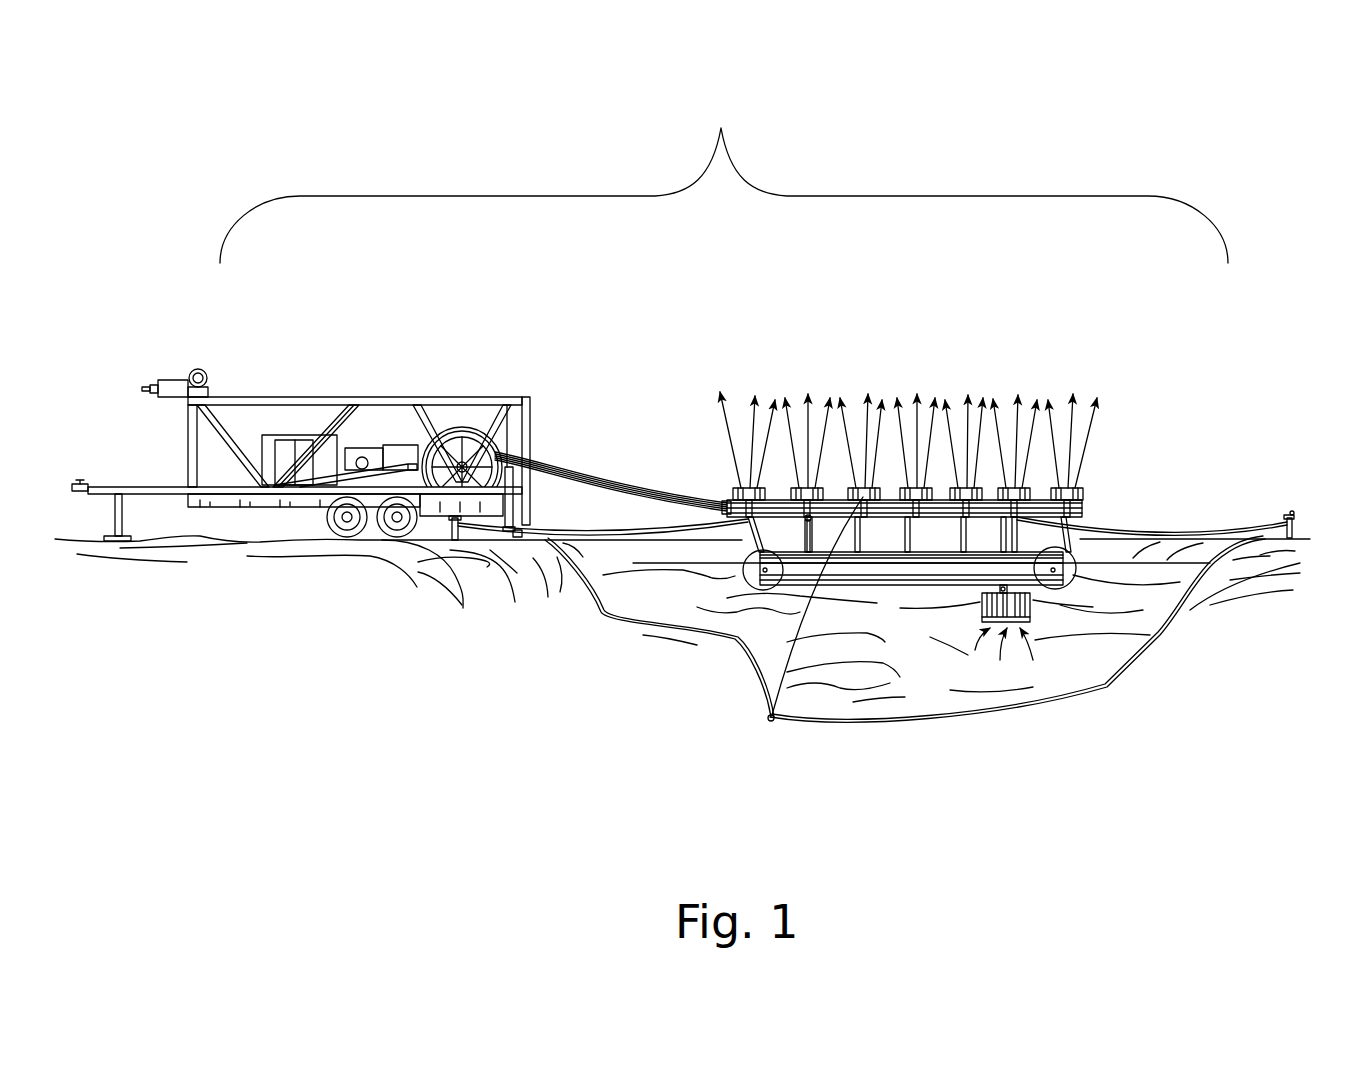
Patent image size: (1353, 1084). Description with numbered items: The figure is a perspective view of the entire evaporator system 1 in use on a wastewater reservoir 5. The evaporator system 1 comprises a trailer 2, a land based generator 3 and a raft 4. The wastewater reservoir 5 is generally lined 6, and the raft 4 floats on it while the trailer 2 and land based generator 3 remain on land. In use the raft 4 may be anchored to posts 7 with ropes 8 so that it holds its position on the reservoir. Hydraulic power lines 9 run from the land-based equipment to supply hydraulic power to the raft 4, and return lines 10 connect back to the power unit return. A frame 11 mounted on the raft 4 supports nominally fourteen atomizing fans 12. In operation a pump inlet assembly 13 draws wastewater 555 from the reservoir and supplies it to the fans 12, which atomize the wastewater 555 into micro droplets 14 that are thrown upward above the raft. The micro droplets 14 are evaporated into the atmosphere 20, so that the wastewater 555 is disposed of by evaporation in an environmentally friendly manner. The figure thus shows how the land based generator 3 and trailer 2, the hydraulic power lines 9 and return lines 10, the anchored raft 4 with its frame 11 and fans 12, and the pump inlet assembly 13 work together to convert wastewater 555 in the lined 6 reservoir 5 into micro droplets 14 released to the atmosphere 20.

The evaporator system 1 is at (724, 181).
The atmosphere 20 is at (1018, 151).
The trailer 2 is at (150, 484).
The land based generator 3 is at (395, 447).
The raft 4 is at (1043, 567).
The wastewater reservoir 5 is at (1125, 622).
The liner 6 is at (1107, 687).
The posts 7 is at (455, 541).
The ropes 8 is at (606, 538).
The hydraulic power lines 9 is at (632, 497).
The return lines 10 is at (592, 467).
The frame 11 is at (807, 530).
The atomizing fans 12 is at (771, 720).
The pump inlet assembly 13 is at (983, 610).
The micro droplets 14 is at (755, 412).
The wastewater 555 is at (988, 660).